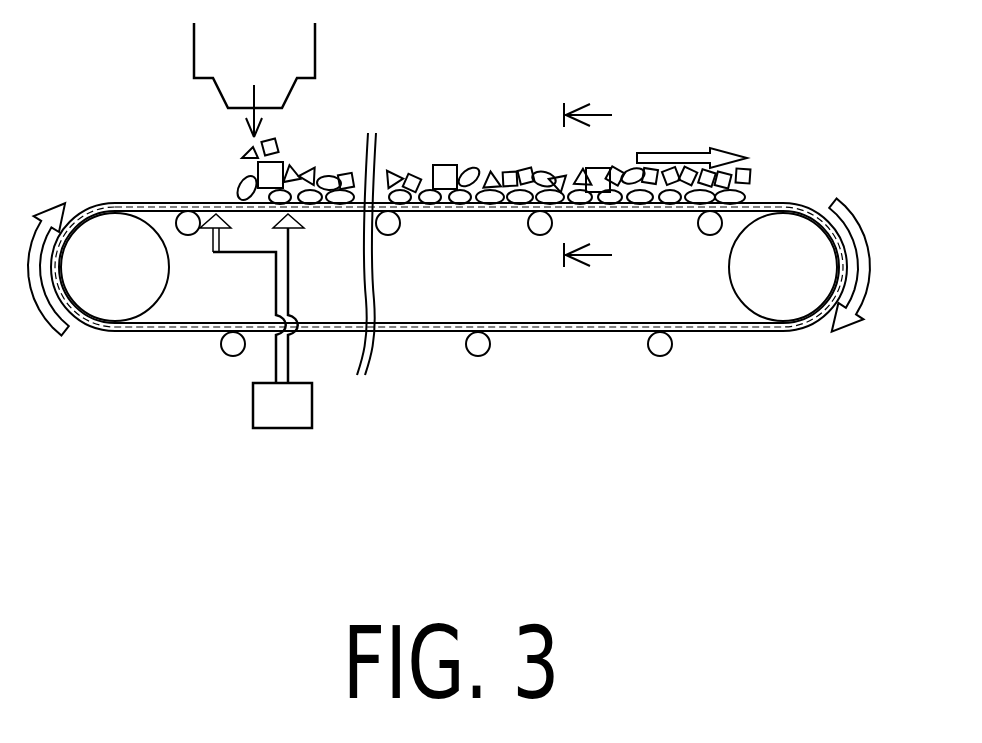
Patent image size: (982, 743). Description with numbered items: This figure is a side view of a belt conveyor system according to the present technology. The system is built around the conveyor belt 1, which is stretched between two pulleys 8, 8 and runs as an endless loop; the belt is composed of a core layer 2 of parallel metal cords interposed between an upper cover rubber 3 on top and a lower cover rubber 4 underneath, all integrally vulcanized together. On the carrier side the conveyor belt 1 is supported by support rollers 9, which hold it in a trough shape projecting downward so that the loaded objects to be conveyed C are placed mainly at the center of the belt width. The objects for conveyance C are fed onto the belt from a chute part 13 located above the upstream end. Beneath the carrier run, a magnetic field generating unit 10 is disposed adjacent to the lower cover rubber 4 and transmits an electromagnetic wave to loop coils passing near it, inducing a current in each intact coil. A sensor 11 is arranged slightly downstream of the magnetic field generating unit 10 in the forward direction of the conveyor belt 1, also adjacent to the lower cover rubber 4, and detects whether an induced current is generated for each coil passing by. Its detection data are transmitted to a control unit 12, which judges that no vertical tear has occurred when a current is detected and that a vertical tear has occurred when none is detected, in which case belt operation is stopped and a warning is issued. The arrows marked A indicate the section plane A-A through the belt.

The conveyor belt 1 is at (763, 197).
The core layer 2 is at (472, 214).
The upper cover rubber 3 is at (194, 203).
The lower cover rubber 4 is at (530, 323).
The pulley 8 is at (112, 308).
The support roller 9 is at (388, 238).
The magnetic field generating unit 10 is at (205, 237).
The sensor 11 is at (298, 230).
The control unit 12 is at (290, 428).
The chute part 13 is at (310, 60).
The object for conveyance C is at (280, 150).
The section line A- A is at (600, 185).